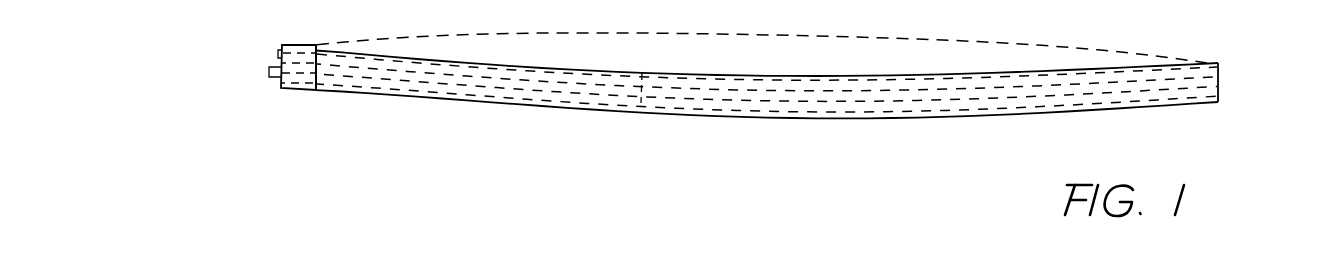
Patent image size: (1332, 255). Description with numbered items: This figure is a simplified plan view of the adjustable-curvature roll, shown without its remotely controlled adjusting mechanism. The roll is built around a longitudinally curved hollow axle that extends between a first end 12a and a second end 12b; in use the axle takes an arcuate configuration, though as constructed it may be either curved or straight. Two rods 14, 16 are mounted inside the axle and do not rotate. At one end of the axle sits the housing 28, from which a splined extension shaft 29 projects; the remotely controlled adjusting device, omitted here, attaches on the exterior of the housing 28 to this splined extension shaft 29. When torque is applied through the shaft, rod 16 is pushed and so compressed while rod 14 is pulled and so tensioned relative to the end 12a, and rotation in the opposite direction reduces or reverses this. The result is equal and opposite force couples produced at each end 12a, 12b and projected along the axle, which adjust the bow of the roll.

The end of the axle 12a is at (1222, 69).
The end of the axle 12b is at (316, 90).
The rod 14 is at (742, 80).
The rod 16 is at (643, 75).
The housing 28 is at (307, 92).
The splined extension shaft 29 is at (269, 72).